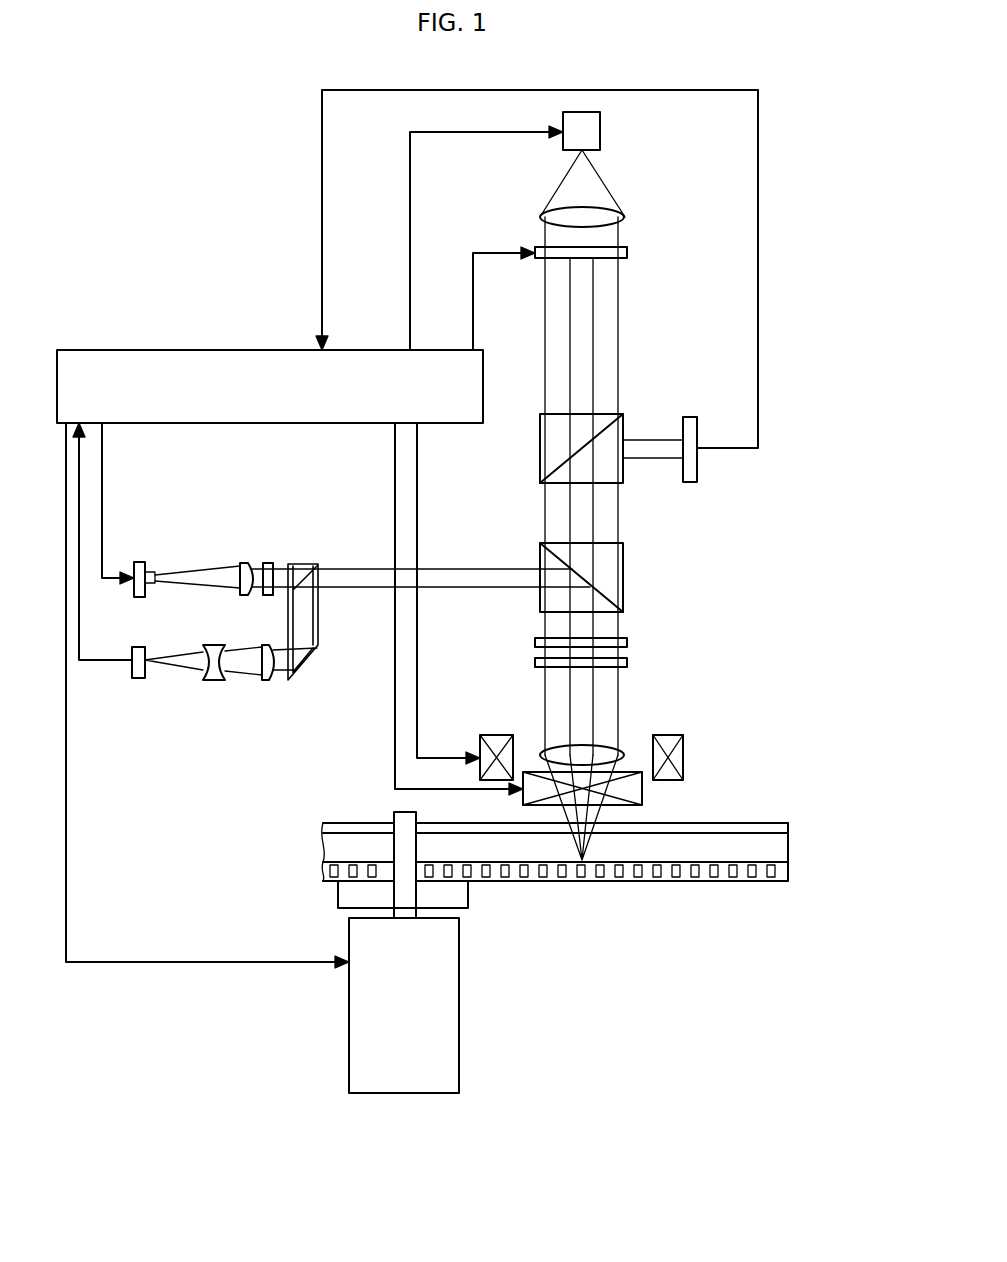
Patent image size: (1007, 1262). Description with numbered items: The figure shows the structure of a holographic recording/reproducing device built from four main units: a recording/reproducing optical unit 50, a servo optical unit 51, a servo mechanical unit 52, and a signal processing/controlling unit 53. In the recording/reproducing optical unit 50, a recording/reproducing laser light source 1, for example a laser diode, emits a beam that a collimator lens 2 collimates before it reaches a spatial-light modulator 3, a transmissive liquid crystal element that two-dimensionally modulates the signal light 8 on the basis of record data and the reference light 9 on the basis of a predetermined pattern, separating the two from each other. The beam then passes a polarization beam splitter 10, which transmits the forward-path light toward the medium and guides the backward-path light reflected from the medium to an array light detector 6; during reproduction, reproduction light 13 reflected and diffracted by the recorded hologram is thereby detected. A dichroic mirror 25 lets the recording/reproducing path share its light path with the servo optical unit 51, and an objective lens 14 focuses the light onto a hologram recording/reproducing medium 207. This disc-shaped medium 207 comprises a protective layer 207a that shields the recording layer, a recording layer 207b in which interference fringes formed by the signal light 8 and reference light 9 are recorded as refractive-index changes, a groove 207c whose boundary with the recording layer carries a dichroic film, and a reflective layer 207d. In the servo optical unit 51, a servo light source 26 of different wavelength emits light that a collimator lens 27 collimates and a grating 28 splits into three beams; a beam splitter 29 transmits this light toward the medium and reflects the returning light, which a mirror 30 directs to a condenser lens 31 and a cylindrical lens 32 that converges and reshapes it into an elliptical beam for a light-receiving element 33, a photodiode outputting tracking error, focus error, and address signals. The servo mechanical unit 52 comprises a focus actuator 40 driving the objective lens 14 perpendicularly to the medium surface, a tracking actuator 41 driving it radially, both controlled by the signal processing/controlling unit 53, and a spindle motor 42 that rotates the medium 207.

The recording/reproducing laser light source 1 is at (600, 132).
The collimator lens 2 is at (625, 217).
The spatial-light modulator 3 is at (627, 253).
The array light detector 6 is at (690, 482).
The signal light 8 is at (587, 305).
The reference light 9 is at (555, 355).
The polarization beam splitter 10 is at (540, 448).
The reproduction light 13 is at (652, 447).
The objective lens 14 is at (625, 750).
The dichroic mirror 25 is at (623, 548).
The servo light source 26 is at (138, 562).
The collimator lens 27 is at (245, 563).
The grating 28 is at (268, 563).
The beam splitter 29 is at (305, 564).
The mirror 30 is at (305, 668).
The condenser lens 31 is at (267, 680).
The cylindrical lens 32 is at (214, 680).
The light-receiving element 33 is at (137, 678).
The focus actuator 40 is at (480, 742).
The tracking actuator 41 is at (642, 795).
The spindle motor 42 is at (459, 1005).
The recording/reproducing optical unit 50 is at (498, 486).
The servo optical unit 51 is at (241, 586).
The servo mechanical unit 52 is at (585, 733).
The signal processing/controlling unit 53 is at (127, 355).
The hologram recording/reproducing medium 207 is at (600, 840).
The protective layer 207a is at (788, 828).
The recording layer 207b is at (788, 848).
The groove 207c is at (788, 870).
The reflective layer 207d is at (788, 880).